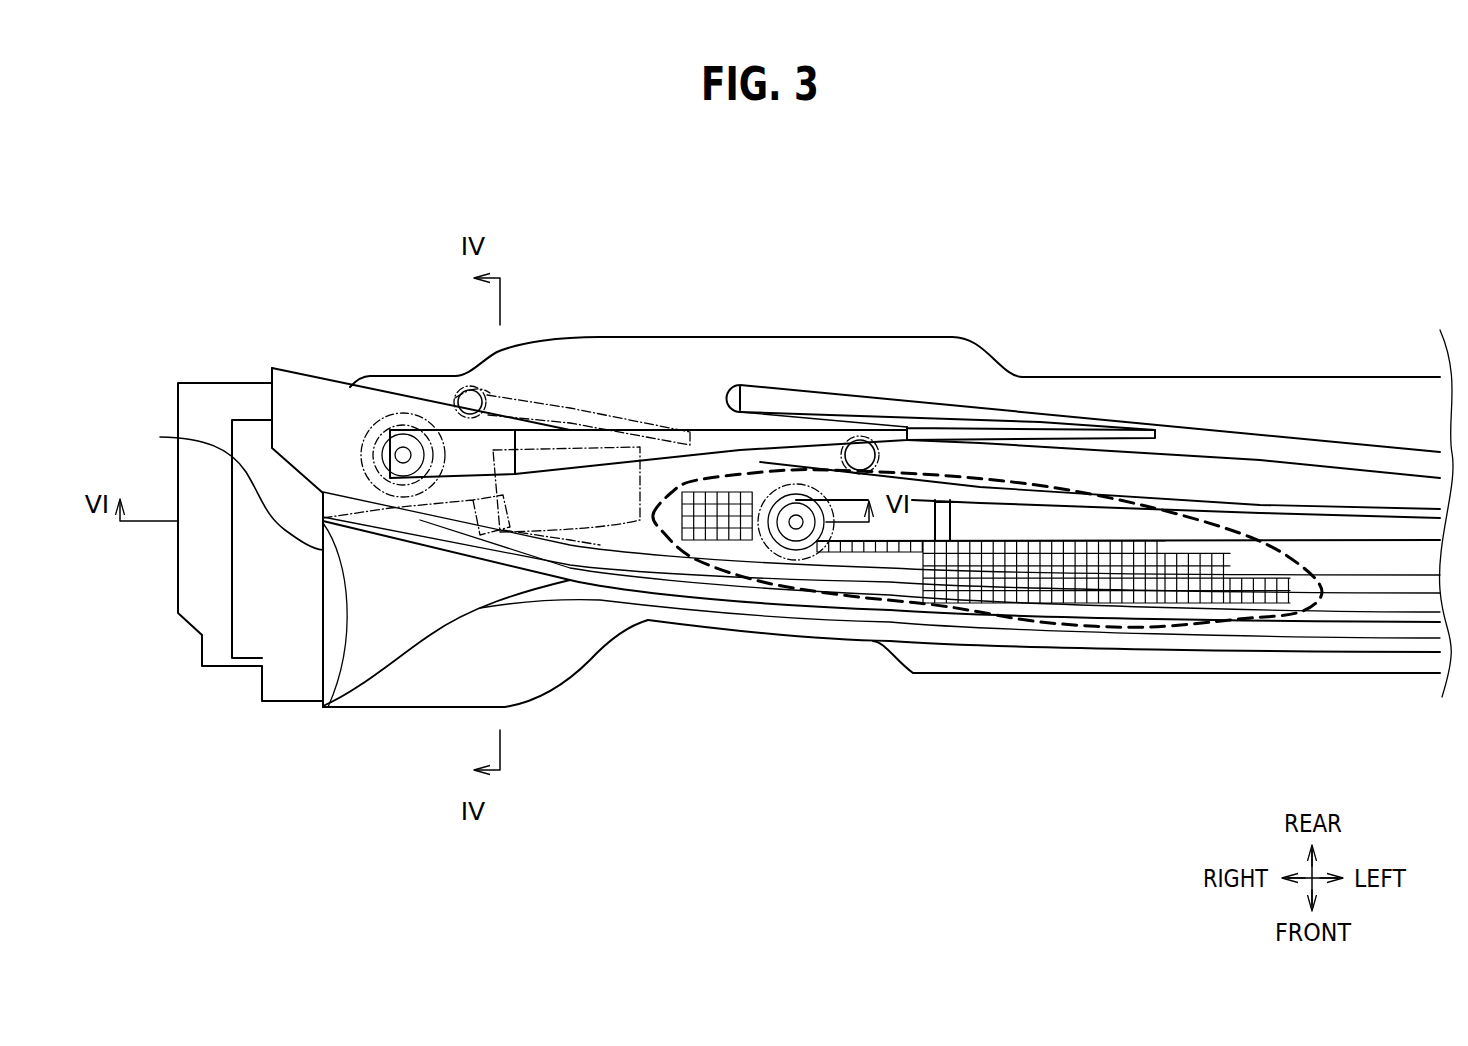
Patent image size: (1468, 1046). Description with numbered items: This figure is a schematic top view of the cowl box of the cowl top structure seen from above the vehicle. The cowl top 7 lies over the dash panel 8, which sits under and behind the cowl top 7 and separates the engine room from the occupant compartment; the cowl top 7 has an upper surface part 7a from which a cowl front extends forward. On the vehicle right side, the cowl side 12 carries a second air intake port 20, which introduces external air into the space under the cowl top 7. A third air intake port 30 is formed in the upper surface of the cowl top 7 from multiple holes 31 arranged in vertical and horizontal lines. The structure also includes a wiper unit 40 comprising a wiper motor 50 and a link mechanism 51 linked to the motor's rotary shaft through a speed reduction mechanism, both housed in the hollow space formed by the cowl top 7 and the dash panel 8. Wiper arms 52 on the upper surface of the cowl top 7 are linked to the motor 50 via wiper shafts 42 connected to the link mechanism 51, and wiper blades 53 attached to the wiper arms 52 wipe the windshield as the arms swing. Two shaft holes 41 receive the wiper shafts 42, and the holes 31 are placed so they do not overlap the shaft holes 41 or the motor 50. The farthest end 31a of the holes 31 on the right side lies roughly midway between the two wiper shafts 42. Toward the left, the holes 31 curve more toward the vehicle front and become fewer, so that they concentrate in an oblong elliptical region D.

The cowl top 7 is at (417, 392).
The upper surface part 7a is at (1196, 480).
The dash panel 8 is at (245, 395).
The cowl side 12 is at (221, 539).
The second air intake port 20 is at (325, 570).
The third air intake port 30 is at (712, 728).
The holes 31 is at (723, 523).
The farthest end 31a is at (683, 510).
The wiper unit 40 is at (650, 407).
The shaft holes 41 is at (390, 417).
The wiper shafts 42 is at (406, 480).
The wiper motor 50 is at (587, 510).
The link mechanism 51 is at (565, 420).
The wiper arms 52 is at (793, 480).
The wiper blades 53 is at (1238, 443).
The region D is at (985, 478).